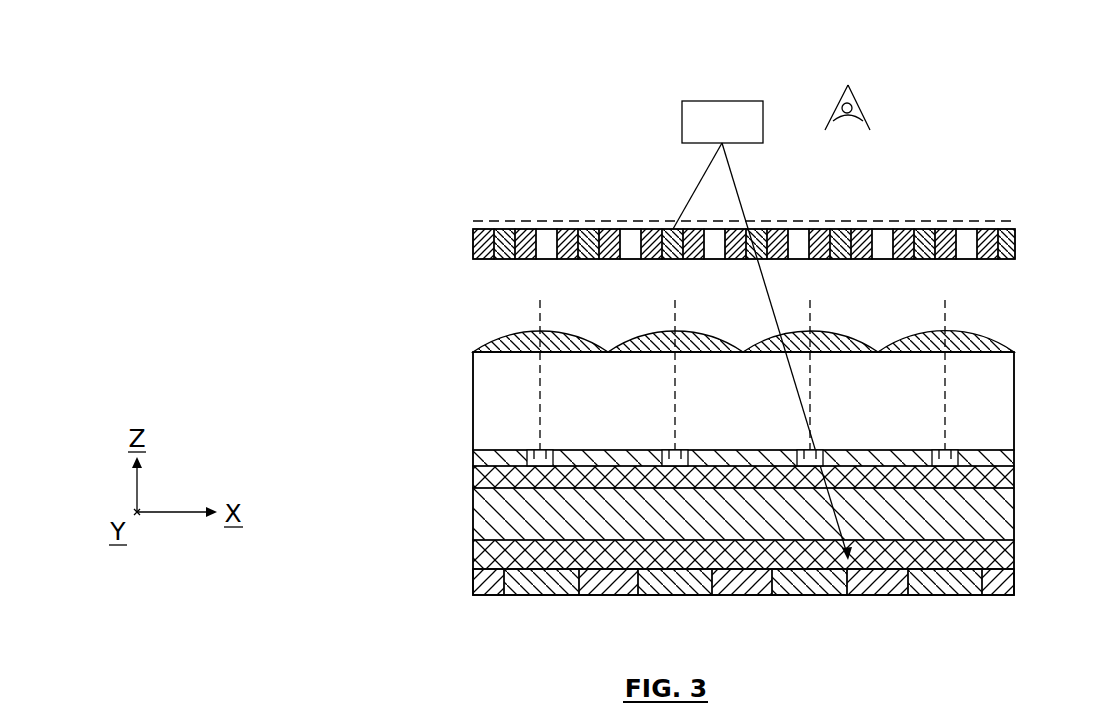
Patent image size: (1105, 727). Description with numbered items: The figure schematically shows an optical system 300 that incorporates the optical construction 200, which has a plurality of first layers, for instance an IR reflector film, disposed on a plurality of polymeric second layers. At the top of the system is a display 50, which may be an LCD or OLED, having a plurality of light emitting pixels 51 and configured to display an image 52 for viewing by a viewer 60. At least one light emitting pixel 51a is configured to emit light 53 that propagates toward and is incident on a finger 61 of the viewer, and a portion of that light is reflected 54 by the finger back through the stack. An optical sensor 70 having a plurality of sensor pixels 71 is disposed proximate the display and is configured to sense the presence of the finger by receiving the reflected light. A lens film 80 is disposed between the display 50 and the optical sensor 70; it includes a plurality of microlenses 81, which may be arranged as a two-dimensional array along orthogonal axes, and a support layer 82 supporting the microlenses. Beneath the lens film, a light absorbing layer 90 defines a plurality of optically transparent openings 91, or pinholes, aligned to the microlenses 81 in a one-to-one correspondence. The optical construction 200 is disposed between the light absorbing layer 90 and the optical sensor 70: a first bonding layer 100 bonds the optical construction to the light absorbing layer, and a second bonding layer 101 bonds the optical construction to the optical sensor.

The optical system 300 is at (219, 103).
The display 50 is at (473, 240).
The light emitting pixels 51 is at (525, 232).
The light emitting pixel 51a is at (672, 227).
The image 52 is at (990, 221).
The light 53 is at (705, 172).
The reflected light 54 is at (738, 195).
The viewer 60 is at (872, 105).
The finger 61 is at (706, 136).
The optical sensor 70 is at (478, 580).
The sensor pixels 71 is at (1005, 582).
The lens film 80 is at (462, 332).
The microlenses 81 is at (995, 334).
The support layer 82 is at (1005, 398).
The light absorbing layer 90 is at (474, 460).
The openings 91 is at (548, 440).
The first bonding layer 100 is at (1010, 478).
The optical construction 200 is at (1000, 525).
The second bonding layer 101 is at (1000, 556).